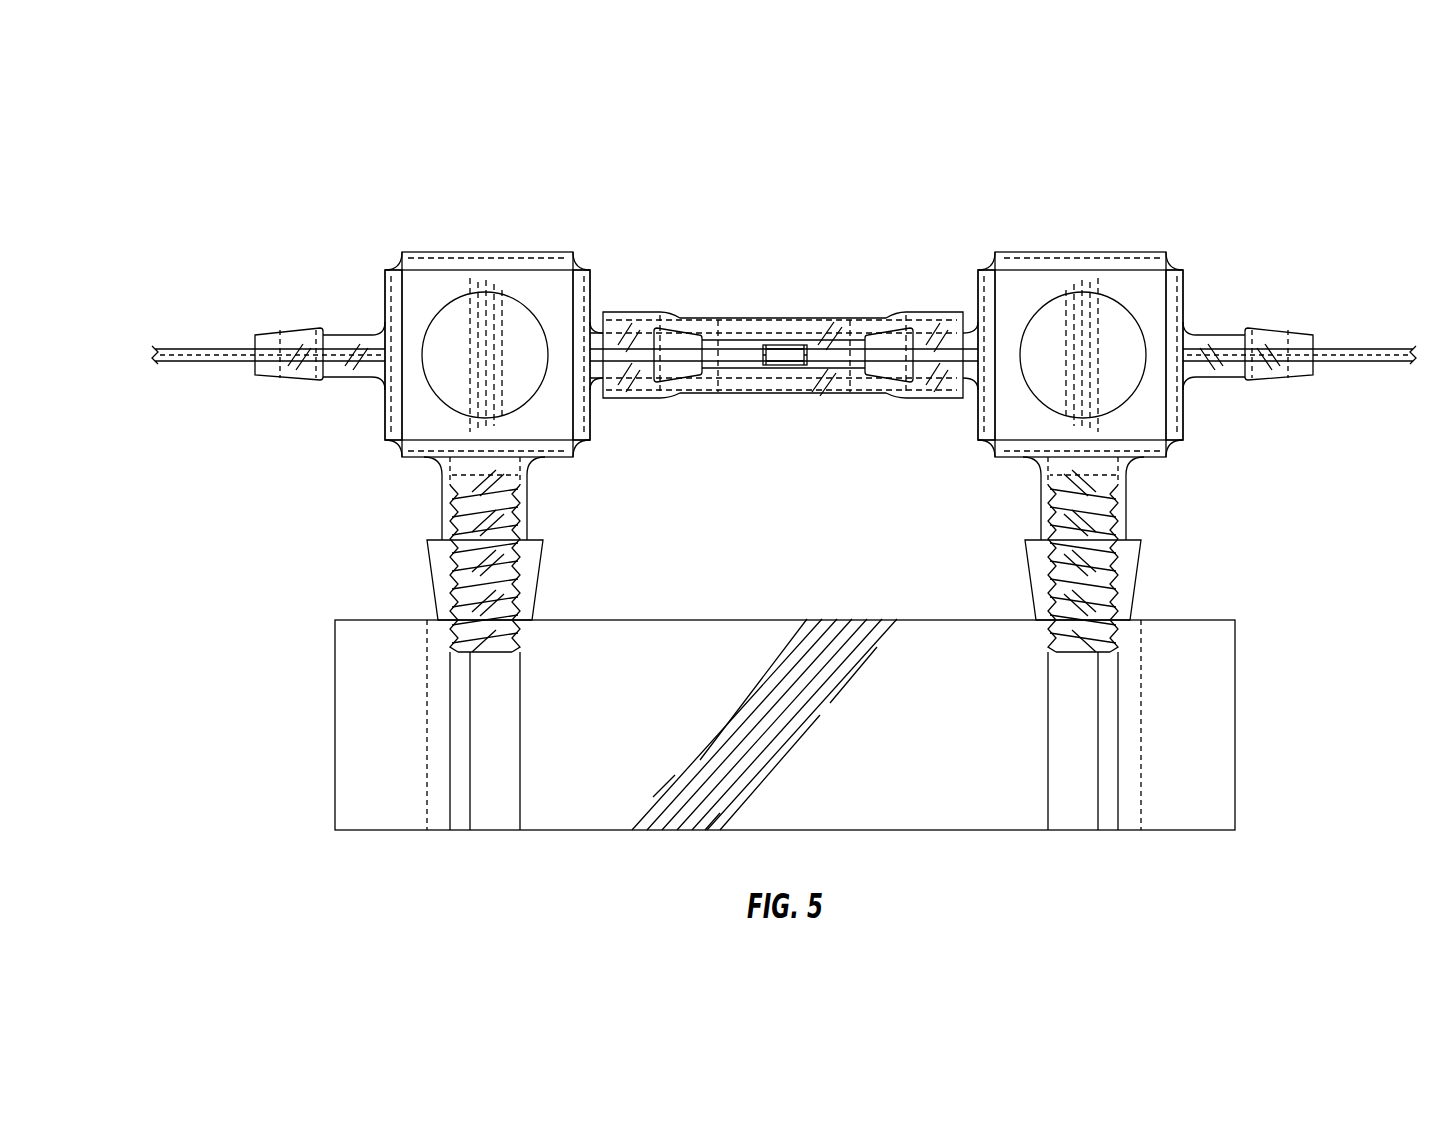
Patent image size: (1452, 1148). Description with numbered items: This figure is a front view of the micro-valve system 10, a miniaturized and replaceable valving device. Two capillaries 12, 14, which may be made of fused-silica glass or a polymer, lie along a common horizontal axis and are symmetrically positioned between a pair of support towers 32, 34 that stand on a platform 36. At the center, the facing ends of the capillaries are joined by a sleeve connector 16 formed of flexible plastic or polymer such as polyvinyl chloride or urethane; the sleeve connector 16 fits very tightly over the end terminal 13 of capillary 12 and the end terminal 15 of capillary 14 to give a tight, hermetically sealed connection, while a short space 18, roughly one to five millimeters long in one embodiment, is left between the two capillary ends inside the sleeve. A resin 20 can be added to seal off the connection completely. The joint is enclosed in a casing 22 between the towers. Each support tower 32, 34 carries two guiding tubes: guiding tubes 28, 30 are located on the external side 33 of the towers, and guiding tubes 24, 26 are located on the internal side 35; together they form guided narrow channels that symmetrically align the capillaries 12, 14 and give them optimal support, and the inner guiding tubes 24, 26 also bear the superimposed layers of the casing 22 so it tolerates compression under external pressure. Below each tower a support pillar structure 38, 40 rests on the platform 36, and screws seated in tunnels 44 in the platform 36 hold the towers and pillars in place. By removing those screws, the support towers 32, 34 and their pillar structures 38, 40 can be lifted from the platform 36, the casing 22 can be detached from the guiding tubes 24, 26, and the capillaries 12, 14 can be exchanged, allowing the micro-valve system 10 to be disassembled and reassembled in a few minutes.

The micro-valve system 10 is at (874, 141).
The capillary 12 is at (182, 348).
The end terminal 13 is at (760, 366).
The capillary 14 is at (1385, 348).
The end terminal 15 is at (806, 366).
The sleeve connector 16 is at (790, 318).
The space 18 is at (784, 364).
The resin 20 is at (760, 318).
The casing 22 is at (838, 378).
The guiding tube 24 is at (680, 318).
The guiding tube 26 is at (890, 318).
The guiding tube 28 is at (268, 337).
The guiding tube 30 is at (1300, 337).
The support tower 32 is at (478, 250).
The external side 33 is at (388, 420).
The support tower 34 is at (1090, 250).
The internal side 35 is at (586, 420).
The platform 36 is at (1236, 728).
The support pillar structure 38 is at (528, 528).
The support pillar structure 40 is at (1126, 528).
The tunnel 44 is at (480, 773).